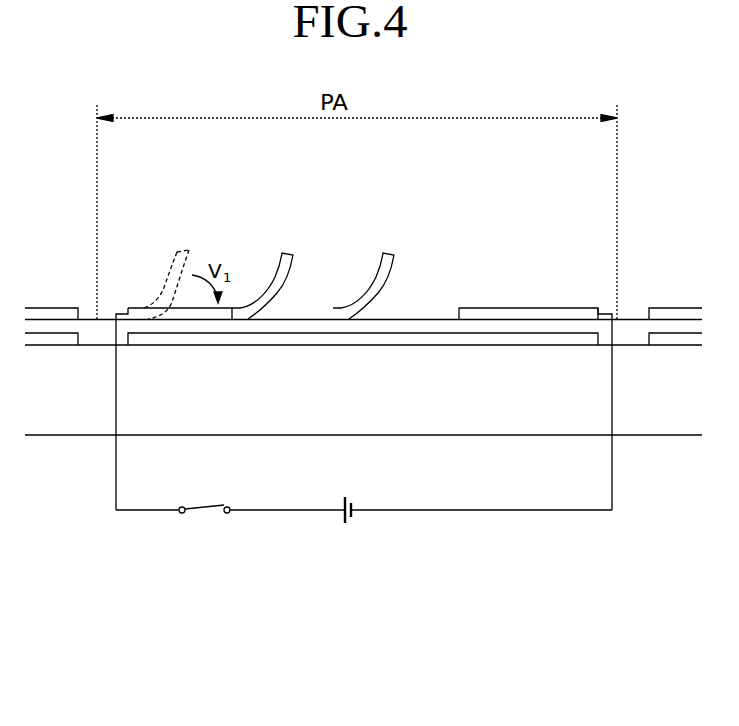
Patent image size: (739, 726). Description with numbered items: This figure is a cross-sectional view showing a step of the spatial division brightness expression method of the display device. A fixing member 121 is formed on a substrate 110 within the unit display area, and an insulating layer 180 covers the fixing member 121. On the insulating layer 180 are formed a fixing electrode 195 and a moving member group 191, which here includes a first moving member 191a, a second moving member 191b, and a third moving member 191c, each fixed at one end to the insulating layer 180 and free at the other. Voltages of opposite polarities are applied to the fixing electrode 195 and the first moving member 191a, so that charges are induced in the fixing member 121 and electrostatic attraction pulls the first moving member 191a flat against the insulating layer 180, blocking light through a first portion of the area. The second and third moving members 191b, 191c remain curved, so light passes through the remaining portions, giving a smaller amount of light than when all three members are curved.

The substrate 110 is at (82, 417).
The fixing member 121 is at (412, 338).
The insulating layer 180 is at (525, 327).
The moving member group 191 is at (382, 178).
The first moving member 191a is at (161, 290).
The second moving member 191b is at (273, 284).
The third moving member 191c is at (374, 284).
The fixing electrode 195 is at (502, 315).